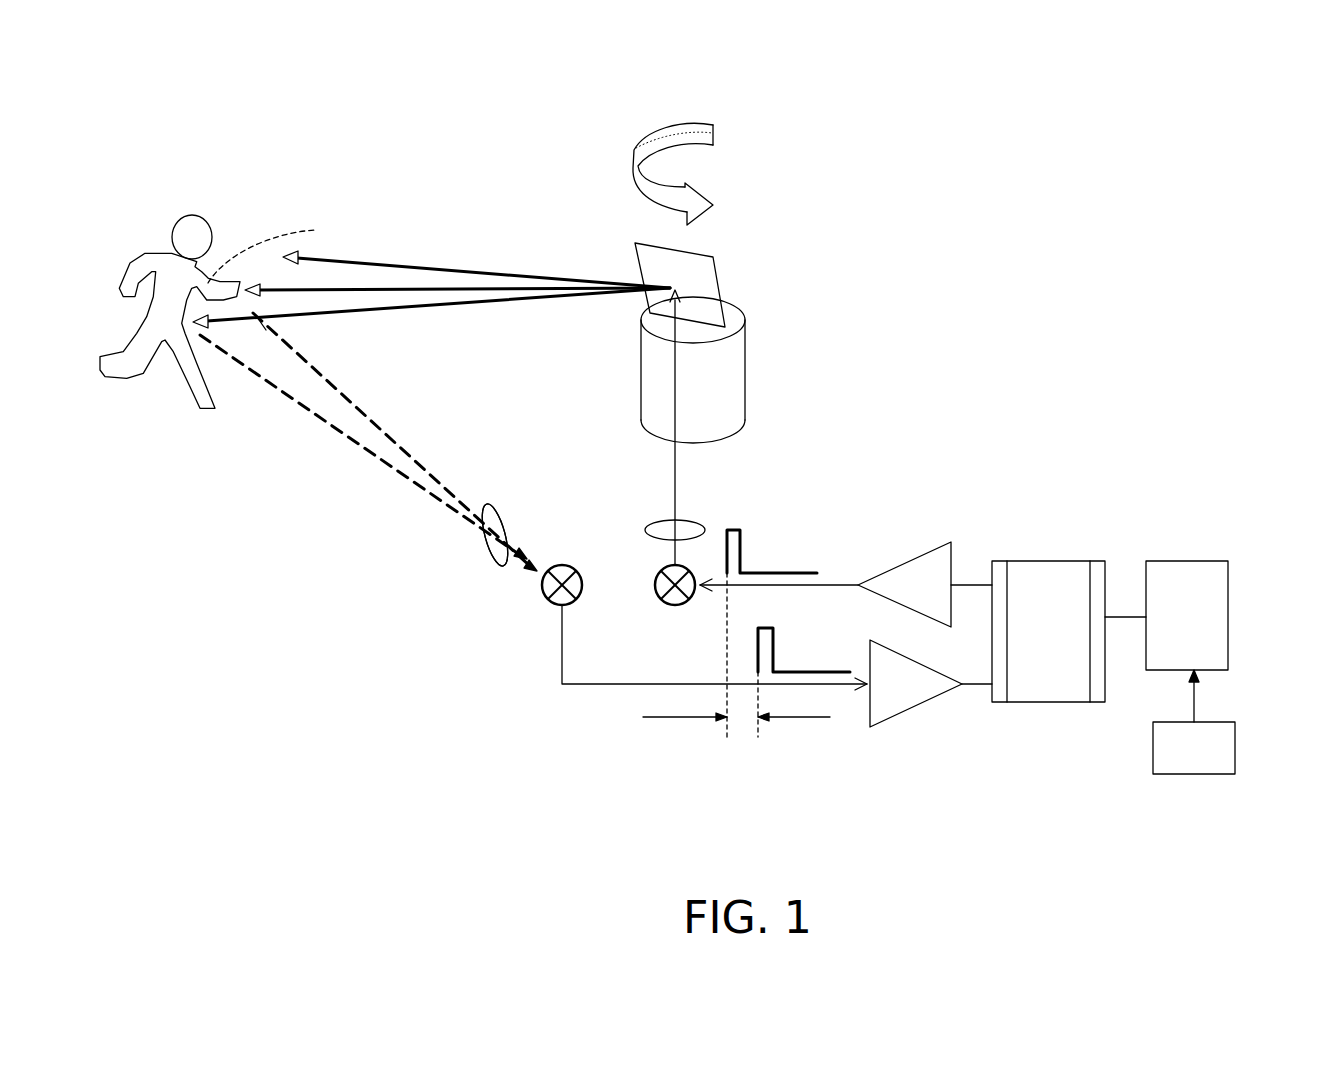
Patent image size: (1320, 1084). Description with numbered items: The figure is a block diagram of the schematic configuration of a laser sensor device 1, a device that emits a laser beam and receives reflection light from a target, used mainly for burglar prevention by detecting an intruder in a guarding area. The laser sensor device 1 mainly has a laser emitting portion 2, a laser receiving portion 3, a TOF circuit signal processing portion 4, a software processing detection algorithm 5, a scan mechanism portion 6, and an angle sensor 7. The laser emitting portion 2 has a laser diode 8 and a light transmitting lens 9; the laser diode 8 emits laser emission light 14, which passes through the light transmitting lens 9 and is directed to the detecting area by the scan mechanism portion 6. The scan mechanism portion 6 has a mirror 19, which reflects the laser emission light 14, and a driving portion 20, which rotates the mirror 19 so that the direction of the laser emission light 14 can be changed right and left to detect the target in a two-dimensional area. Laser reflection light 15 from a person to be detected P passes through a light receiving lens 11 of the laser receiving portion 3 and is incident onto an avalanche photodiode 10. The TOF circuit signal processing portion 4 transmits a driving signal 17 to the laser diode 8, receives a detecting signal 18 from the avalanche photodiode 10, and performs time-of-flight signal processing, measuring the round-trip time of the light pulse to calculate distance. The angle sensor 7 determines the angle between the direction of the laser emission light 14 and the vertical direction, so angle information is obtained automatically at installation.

The person to be detected P is at (185, 210).
The laser sensor device 1 is at (943, 220).
The laser emitting portion 2 is at (727, 513).
The laser receiving portion 3 is at (457, 618).
The TOF circuit signal processing portion 4 is at (1114, 530).
The software processing detection algorithm 5 is at (1237, 530).
The scan mechanism portion 6 is at (766, 222).
The angle sensor 7 is at (1153, 747).
The laser diode 8 is at (677, 608).
The light transmitting lens 9 is at (648, 530).
The avalanche photodiode 10 is at (555, 603).
The light receiving lens 11 is at (487, 533).
The laser emission light 14 is at (440, 267).
The laser reflection light 15 is at (347, 440).
The driving signal 17 is at (740, 528).
The detecting signal 18 is at (777, 625).
The mirror 19 is at (640, 285).
The driving portion 20 is at (640, 365).